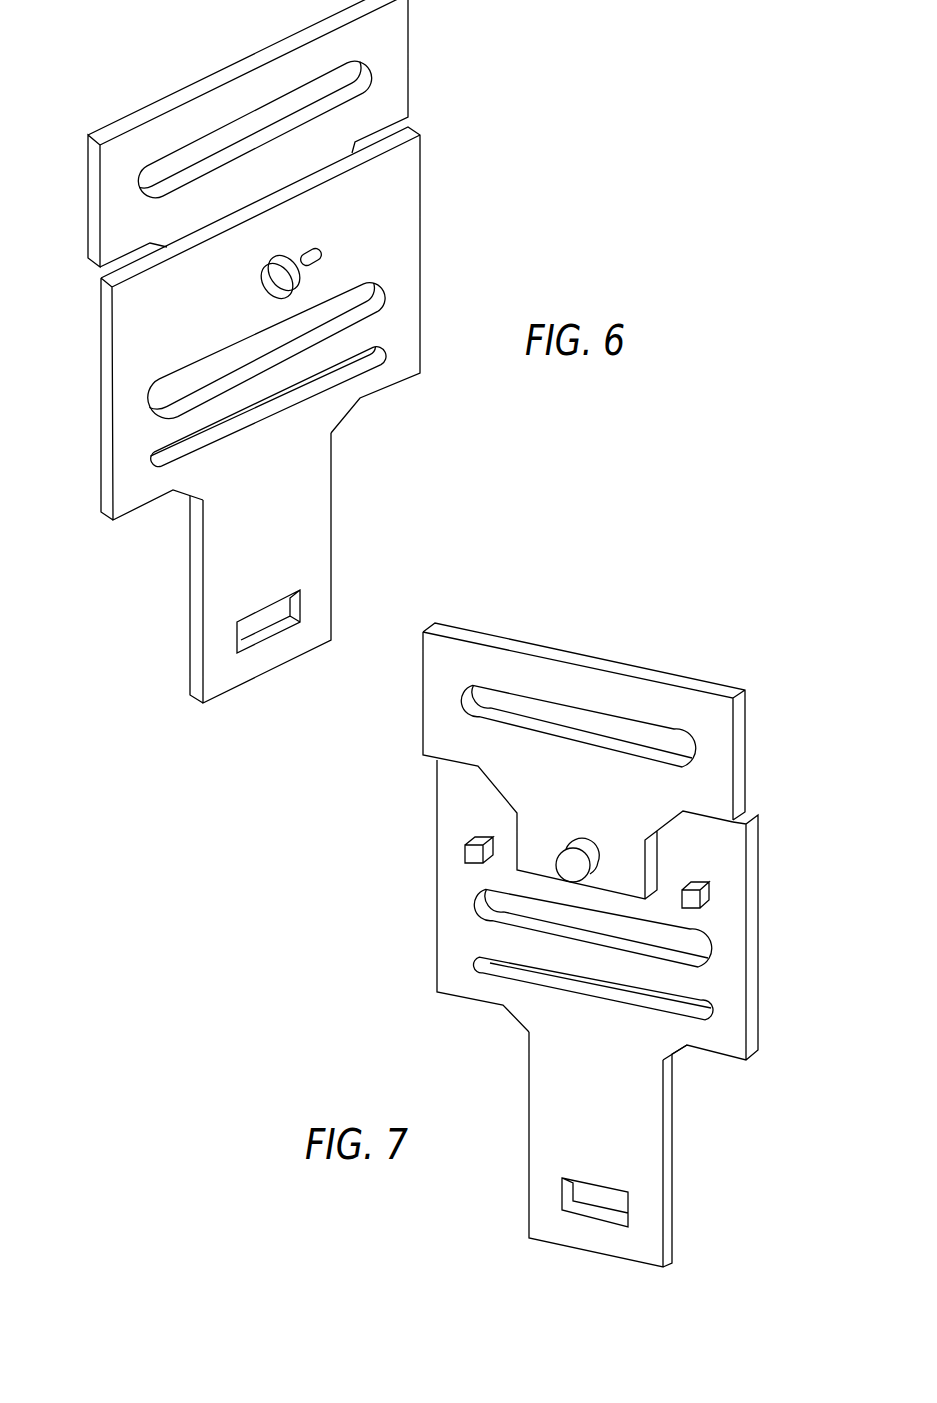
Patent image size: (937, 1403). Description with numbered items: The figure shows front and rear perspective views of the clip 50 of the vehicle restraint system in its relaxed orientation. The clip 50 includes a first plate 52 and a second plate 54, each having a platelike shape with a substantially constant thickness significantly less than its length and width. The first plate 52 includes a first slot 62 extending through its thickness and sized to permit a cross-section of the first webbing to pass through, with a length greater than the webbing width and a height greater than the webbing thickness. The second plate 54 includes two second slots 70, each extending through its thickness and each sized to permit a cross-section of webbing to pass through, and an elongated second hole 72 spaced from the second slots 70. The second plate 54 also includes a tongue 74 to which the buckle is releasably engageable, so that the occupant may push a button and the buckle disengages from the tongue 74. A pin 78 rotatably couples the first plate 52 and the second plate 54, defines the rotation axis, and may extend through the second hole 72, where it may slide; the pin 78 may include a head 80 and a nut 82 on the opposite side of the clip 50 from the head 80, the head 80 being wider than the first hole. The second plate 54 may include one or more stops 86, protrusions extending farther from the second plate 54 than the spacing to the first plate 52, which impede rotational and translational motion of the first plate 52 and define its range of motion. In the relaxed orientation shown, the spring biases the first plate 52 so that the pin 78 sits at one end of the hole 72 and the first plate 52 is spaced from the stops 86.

In FIG. 6, the clip 50 is at (134, 70).
In FIG. 7, the clip 50 is at (654, 623).
In FIG. 6, the first plate 52 is at (410, 63).
In FIG. 7, the first plate 52 is at (747, 745).
In FIG. 6, the second plate 54 is at (424, 188).
In FIG. 7, the second plate 54 is at (763, 875).
In FIG. 6, the first slot 62 is at (272, 95).
In FIG. 7, the first slot 62 is at (538, 700).
In FIG. 6, the second slots 70 is at (152, 456).
In FIG. 7, the second slots 70 is at (478, 960).
In FIG. 6, the second hole 72 is at (330, 262).
In FIG. 6, the tongue 74 is at (333, 536).
In FIG. 7, the tongue 74 is at (674, 1145).
In FIG. 6, the pin 78 is at (317, 257).
In FIG. 6, the head 80 is at (262, 276).
In FIG. 7, the nut 82 is at (580, 848).
In FIG. 7, the stops 86 is at (463, 855).